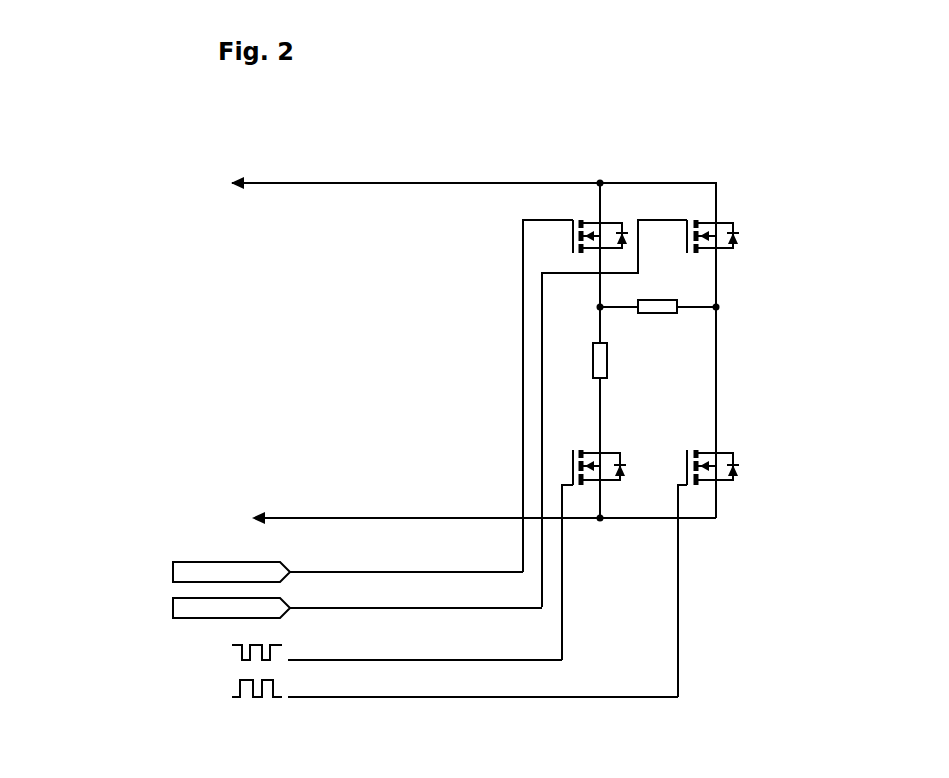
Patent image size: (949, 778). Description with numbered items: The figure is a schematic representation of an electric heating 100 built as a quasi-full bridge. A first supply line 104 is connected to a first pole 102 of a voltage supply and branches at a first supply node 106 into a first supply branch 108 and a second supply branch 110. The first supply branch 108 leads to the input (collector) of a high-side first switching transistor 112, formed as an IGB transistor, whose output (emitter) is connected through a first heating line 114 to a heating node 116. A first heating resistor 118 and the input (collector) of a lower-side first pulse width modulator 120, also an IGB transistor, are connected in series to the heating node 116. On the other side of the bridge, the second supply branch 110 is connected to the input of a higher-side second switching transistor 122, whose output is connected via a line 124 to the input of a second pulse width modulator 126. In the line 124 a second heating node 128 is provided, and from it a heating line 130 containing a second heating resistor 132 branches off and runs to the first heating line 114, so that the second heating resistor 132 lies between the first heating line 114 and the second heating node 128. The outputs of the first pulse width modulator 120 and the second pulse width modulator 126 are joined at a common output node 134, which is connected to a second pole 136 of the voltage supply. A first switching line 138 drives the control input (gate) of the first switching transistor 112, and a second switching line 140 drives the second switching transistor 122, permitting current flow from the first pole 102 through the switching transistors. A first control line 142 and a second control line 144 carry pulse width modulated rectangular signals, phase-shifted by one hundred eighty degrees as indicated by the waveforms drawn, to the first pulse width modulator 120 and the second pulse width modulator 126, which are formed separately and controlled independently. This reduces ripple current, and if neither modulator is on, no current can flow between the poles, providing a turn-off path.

The electric heating 100 is at (852, 186).
The first pole of the voltage supply 102 is at (216, 184).
The first supply line 104 is at (465, 185).
The first supply node 106 is at (601, 182).
The first supply branch 108 is at (598, 203).
The second supply branch 110 is at (710, 182).
The first switching transistor 112 is at (573, 242).
The first heating line 114 is at (599, 292).
The heating node 116 is at (598, 309).
The first heating resistor 118 is at (607, 364).
The first pulse width modulator 120 is at (602, 451).
The second switching transistor 122 is at (740, 244).
The line 124 is at (717, 352).
The second pulse width modulator 126 is at (740, 462).
The second heating node 128 is at (718, 305).
The heating line 130 is at (703, 306).
The second heating resistor 132 is at (655, 314).
The common output node 134 is at (600, 520).
The second pole of the voltage supply 136 is at (458, 518).
The first switching line 138 is at (433, 573).
The second switching line 140 is at (431, 611).
The first control line 142 is at (446, 660).
The second control line 144 is at (446, 697).